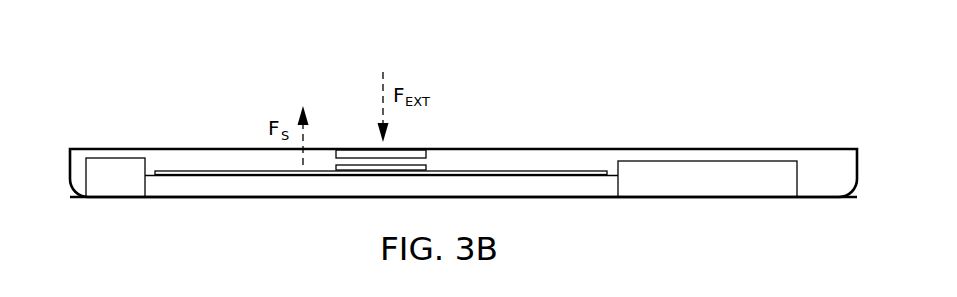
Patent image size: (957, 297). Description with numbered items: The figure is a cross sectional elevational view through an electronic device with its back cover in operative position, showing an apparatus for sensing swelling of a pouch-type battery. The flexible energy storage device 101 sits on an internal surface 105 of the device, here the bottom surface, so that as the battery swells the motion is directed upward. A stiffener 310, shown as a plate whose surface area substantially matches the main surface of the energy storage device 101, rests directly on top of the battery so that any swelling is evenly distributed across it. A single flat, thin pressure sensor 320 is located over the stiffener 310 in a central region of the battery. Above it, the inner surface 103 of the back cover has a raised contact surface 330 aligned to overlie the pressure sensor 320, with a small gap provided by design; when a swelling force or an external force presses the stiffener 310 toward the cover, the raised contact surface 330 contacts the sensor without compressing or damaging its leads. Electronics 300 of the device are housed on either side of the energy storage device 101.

The energy storage device 101 is at (566, 188).
The inner surface of back cover 103 is at (556, 150).
The internal surface 105 is at (230, 198).
The electronics 300 is at (110, 187).
The stiffener 310 is at (177, 170).
The pressure sensor 320 is at (347, 167).
The raised contact surface 330 is at (415, 151).